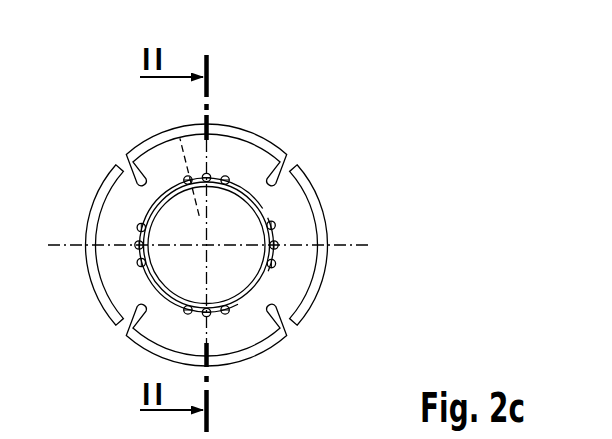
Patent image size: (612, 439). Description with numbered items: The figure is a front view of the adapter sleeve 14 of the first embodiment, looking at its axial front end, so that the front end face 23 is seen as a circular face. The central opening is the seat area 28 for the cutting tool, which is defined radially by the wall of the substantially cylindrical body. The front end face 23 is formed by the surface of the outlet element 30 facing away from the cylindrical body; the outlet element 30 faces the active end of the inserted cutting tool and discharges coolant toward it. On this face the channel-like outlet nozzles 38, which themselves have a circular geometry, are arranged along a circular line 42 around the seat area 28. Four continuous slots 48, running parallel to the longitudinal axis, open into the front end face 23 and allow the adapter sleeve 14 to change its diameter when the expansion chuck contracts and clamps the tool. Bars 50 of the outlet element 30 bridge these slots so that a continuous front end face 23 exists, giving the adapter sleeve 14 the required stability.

The adapter sleeve 14 is at (224, 62).
The front end face 23 is at (103, 278).
The seat area 28 is at (170, 228).
The outlet element 30 is at (231, 148).
The outlet nozzle 38 is at (284, 261).
The circular line 42 is at (265, 208).
The continuous slot 48 is at (292, 157).
The bar 50 is at (255, 178).